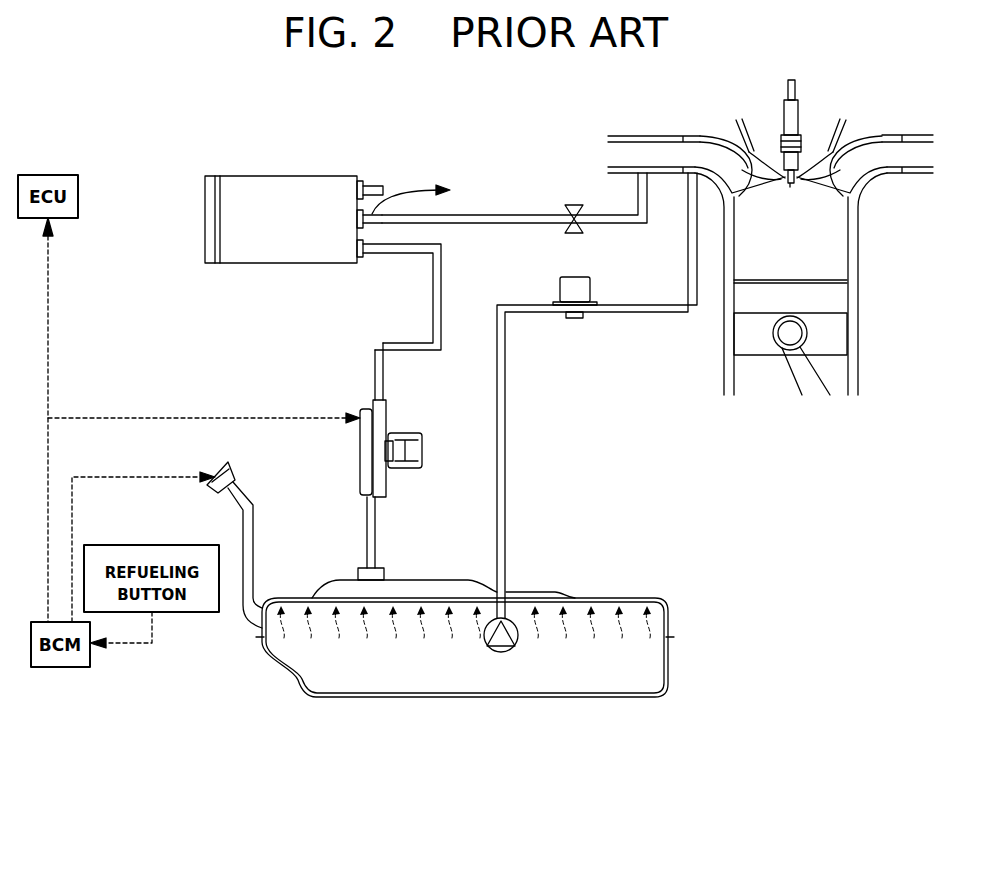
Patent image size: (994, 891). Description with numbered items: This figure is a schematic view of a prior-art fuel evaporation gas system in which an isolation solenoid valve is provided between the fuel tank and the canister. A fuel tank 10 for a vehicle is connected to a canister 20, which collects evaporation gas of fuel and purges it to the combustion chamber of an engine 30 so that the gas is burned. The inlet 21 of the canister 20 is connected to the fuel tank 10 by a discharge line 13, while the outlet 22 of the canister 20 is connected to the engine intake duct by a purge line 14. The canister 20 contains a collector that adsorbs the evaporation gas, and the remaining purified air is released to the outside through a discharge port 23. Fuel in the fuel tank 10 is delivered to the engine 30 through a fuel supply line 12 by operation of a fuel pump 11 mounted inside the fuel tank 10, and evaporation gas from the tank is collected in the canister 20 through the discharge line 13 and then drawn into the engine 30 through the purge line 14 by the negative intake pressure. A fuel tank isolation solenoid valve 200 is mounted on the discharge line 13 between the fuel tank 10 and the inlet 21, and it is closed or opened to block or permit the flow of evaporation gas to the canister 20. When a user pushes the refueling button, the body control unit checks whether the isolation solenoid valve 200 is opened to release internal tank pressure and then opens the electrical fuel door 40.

The fuel tank 10 is at (521, 697).
The fuel pump 11 is at (488, 643).
The fuel supply line 12 is at (506, 482).
The discharge line 13 is at (385, 372).
The purge line 14 is at (499, 213).
The canister 20 is at (272, 176).
The inlet 21 is at (378, 257).
The outlet 22 is at (430, 188).
The discharge port 23 is at (376, 186).
The engine 30 is at (726, 372).
The electrical fuel door 40 is at (220, 462).
The fuel tank isolation solenoid valve 200 is at (407, 468).